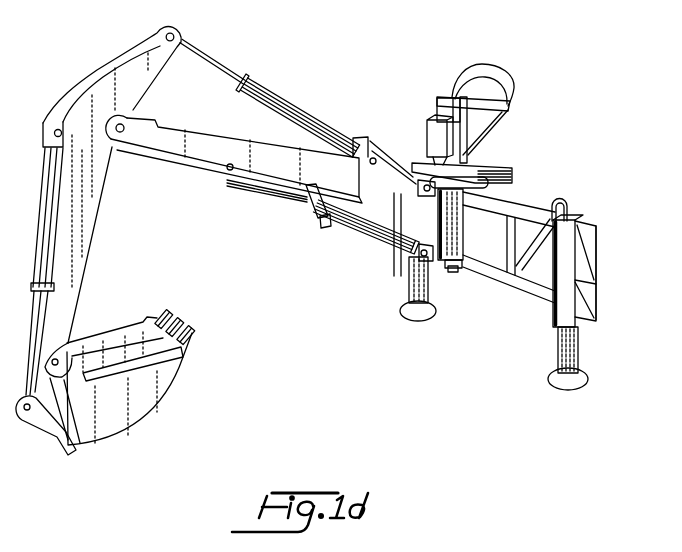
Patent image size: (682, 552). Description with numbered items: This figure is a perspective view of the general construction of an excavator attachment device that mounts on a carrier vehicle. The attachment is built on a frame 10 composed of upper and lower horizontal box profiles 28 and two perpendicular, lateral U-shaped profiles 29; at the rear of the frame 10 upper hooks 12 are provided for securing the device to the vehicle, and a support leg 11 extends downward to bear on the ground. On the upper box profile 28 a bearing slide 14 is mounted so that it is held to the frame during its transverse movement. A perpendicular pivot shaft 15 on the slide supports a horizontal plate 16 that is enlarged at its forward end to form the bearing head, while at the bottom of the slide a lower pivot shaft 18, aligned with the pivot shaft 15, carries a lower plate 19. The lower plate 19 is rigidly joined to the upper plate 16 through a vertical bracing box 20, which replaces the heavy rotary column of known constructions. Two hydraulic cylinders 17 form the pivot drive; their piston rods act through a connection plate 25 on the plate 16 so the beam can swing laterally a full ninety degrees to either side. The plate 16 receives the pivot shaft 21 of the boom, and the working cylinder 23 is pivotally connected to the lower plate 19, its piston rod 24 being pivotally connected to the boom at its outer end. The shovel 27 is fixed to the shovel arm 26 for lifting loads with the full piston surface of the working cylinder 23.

The frame 10 is at (599, 233).
The support leg 11 is at (560, 362).
The upper hooks 12 is at (568, 204).
The bearing slide 14 is at (512, 192).
The pivot shaft 15 is at (467, 162).
The horizontal plate 16 is at (518, 187).
The hydraulic cylinders 17 is at (452, 235).
The lower pivot shaft 18 is at (451, 269).
The lower plate 19 is at (438, 263).
The bracing box 20 is at (415, 240).
The pivot shaft of the boom 21 is at (375, 228).
The working cylinder 23 is at (347, 208).
The piston rod 24 is at (268, 207).
The plate 25 is at (498, 112).
The shovel arm 26 is at (90, 95).
The shovel 27 is at (292, 107).
The horizontal box profiles 28 is at (528, 213).
The U-shaped profiles 29 is at (568, 260).